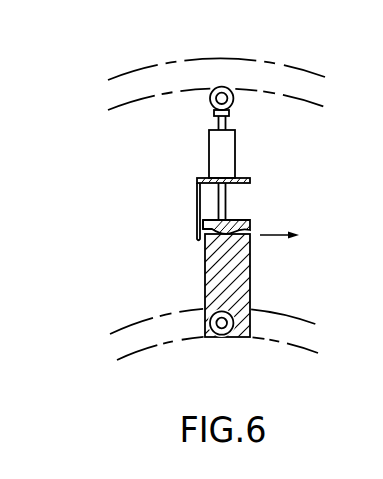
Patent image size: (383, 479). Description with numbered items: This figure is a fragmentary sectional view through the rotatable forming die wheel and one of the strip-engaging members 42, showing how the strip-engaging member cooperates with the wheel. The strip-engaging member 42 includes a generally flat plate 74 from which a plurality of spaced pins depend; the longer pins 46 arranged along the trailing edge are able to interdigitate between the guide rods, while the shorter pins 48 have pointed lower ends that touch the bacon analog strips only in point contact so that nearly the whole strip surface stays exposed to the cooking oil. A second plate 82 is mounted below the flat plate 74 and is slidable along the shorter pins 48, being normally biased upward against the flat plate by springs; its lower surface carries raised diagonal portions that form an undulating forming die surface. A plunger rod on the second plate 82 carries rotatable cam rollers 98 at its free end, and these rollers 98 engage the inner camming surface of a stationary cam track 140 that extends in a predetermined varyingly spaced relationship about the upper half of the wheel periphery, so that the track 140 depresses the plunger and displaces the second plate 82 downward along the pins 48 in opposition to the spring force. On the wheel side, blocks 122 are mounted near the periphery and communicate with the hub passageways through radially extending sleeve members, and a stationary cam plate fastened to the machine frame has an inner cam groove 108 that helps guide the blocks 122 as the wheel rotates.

The stationary cam track 140 is at (217, 57).
The cam rollers 98 is at (233, 104).
The strip-engaging member 42 is at (243, 180).
The flat plate 74 is at (203, 180).
The shorter pins 48 is at (228, 200).
The second plate 82 is at (250, 222).
The longer pins 46 is at (197, 223).
The blocks 122 is at (250, 274).
The inner cam groove 108 is at (207, 337).